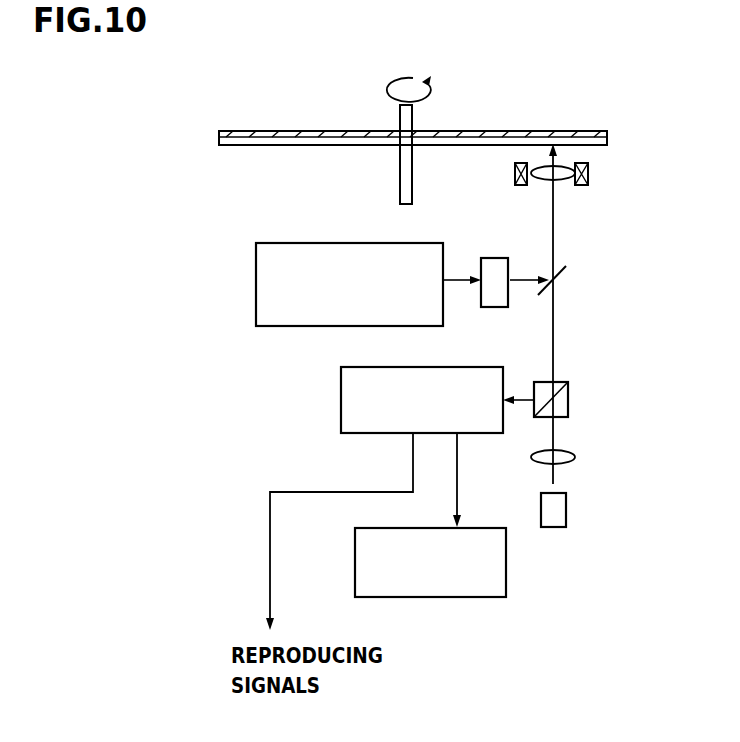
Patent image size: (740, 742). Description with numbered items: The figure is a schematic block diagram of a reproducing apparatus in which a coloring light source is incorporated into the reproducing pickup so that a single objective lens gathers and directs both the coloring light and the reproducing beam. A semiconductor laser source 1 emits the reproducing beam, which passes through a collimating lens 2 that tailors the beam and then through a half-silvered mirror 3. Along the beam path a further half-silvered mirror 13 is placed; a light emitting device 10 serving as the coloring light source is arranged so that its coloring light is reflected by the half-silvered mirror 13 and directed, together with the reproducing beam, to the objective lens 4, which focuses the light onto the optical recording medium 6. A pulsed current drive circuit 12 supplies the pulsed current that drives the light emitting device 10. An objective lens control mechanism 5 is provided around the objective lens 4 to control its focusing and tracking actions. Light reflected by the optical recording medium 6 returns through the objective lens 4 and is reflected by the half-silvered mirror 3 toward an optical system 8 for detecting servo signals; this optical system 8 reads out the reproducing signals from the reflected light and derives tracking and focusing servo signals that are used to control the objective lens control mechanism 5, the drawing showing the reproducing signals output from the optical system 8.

The semiconductor laser source 1 is at (566, 506).
The collimating lens 2 is at (575, 454).
The half-silvered mirror 3 is at (568, 395).
The objective lens 4 is at (557, 181).
The objective lens control mechanism 5 is at (588, 166).
The optical recording medium 6 is at (565, 130).
The optical system for detecting servo signals 8 is at (341, 400).
The light emitting device 10 is at (488, 258).
The pulsed current drive circuit 12 is at (282, 243).
The half-silvered mirror 13 is at (563, 272).